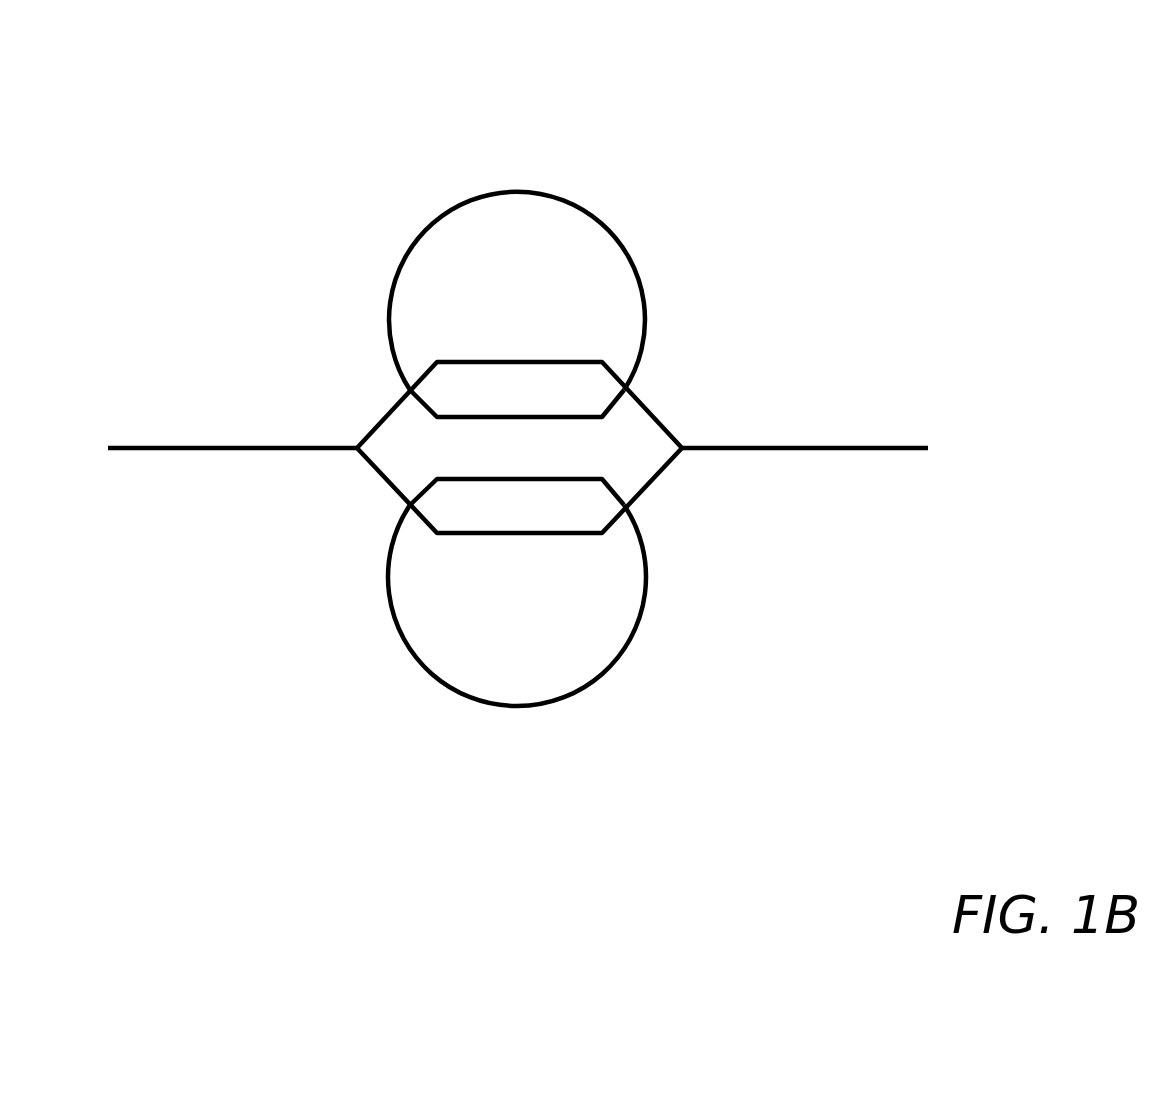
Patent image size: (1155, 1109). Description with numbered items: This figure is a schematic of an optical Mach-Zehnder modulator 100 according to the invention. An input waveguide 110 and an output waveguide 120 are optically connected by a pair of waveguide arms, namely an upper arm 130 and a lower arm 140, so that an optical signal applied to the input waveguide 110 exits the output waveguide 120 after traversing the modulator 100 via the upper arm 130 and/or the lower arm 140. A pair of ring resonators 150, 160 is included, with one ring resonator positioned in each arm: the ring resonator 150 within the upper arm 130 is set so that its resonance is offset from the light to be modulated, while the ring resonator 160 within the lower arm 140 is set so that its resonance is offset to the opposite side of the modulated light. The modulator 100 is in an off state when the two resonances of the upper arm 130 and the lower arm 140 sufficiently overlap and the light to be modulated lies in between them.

The modulator 100 is at (1058, 48).
The input waveguide 110 is at (157, 448).
The output waveguide 120 is at (829, 447).
The upper arm 130 is at (380, 423).
The lower arm 140 is at (381, 491).
The ring resonator 150 is at (643, 288).
The ring resonator 160 is at (613, 650).